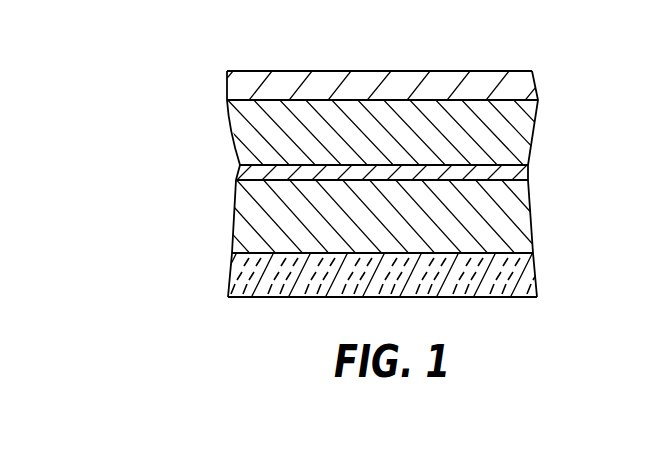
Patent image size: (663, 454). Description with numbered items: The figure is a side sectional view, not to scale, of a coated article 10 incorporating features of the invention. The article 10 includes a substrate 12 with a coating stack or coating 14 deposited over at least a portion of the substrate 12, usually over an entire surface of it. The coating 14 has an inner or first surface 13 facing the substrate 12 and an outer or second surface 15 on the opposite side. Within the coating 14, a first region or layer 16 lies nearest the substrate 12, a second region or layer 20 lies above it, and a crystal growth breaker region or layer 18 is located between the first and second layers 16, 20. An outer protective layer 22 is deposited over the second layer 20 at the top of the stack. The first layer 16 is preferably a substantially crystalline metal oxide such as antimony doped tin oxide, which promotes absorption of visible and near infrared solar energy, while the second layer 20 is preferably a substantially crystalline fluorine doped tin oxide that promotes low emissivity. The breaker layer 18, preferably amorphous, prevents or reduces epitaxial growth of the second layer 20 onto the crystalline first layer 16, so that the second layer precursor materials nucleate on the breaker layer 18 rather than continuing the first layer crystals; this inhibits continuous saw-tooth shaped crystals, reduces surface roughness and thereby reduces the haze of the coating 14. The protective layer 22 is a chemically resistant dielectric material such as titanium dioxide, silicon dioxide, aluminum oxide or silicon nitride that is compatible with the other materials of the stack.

The coated article 10 is at (132, 91).
The substrate 12 is at (537, 270).
The first surface 13 is at (255, 243).
The coating 14 is at (203, 72).
The second surface 15 is at (320, 62).
The first layer 16 is at (534, 210).
The breaker layer 18 is at (530, 170).
The second layer 20 is at (537, 130).
The protective layer 22 is at (539, 82).